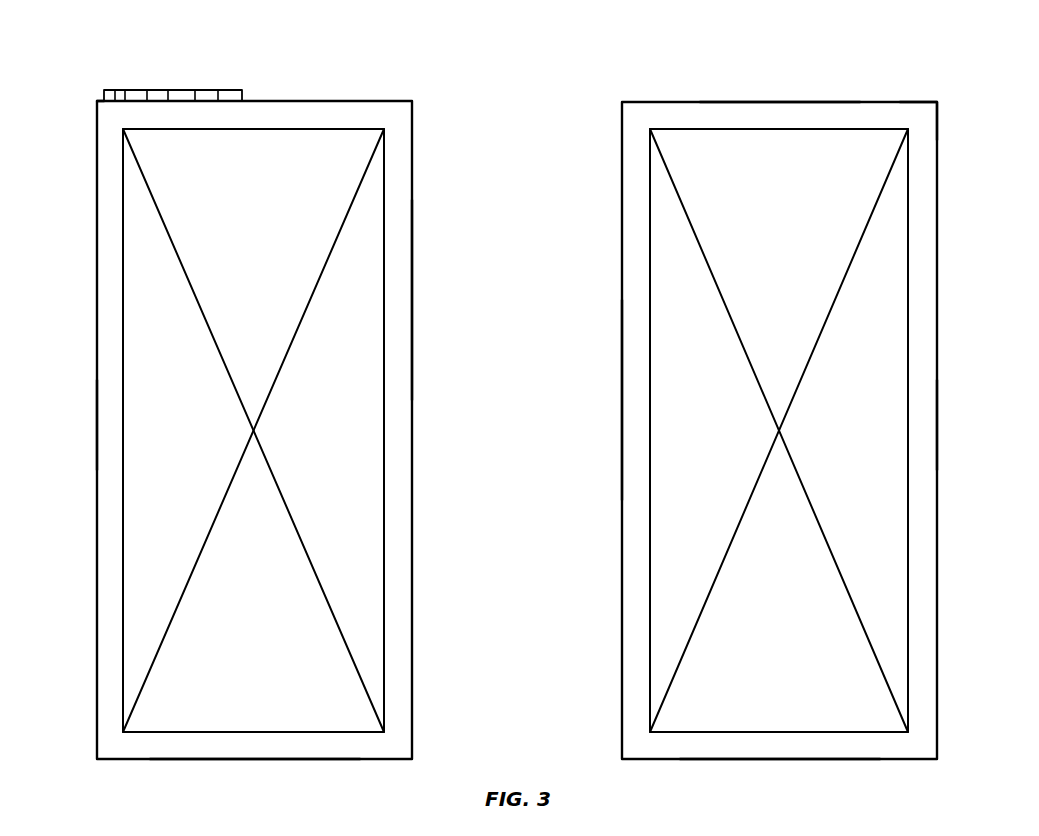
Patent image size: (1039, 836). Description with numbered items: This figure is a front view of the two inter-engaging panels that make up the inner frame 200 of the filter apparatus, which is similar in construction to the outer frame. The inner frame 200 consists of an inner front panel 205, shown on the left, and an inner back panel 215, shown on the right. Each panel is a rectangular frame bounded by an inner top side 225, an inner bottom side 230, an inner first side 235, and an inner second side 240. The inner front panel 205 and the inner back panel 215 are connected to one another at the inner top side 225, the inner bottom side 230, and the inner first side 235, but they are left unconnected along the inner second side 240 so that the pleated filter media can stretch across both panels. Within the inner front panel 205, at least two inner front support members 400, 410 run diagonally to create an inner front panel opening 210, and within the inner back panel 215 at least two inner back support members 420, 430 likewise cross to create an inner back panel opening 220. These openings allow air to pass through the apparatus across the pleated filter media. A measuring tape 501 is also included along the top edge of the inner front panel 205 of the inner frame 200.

The inner frame 200 is at (76, 40).
The inner front panel 205 is at (103, 101).
The measuring tape 501 is at (240, 90).
The inner front support member 410 is at (157, 208).
The inner front support member 400 is at (156, 655).
The inner second side 240 is at (411, 288).
The inner first side 235 is at (97, 430).
The inner front panel opening 210 is at (170, 458).
The inner back panel opening 220 is at (862, 456).
The inner bottom side 230 is at (253, 760).
The inner top side 225 is at (782, 102).
The inner back panel 215 is at (915, 102).
The inner back support member 430 is at (876, 206).
The inner back support member 420 is at (876, 652).